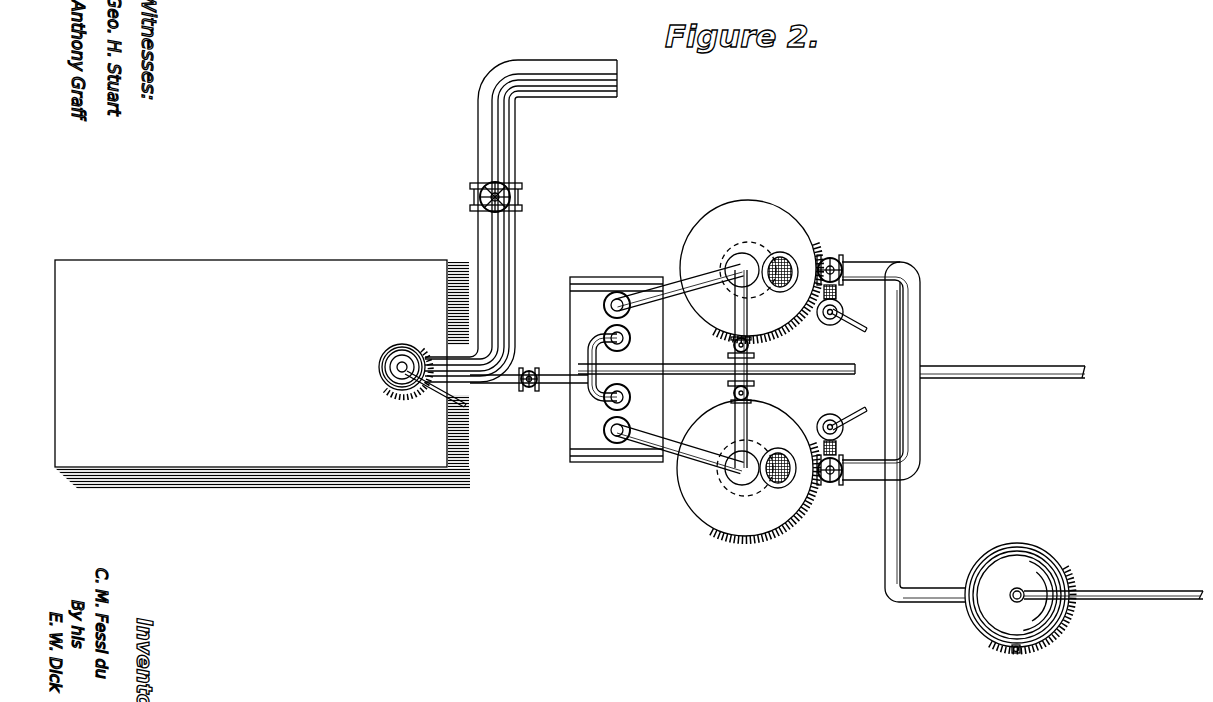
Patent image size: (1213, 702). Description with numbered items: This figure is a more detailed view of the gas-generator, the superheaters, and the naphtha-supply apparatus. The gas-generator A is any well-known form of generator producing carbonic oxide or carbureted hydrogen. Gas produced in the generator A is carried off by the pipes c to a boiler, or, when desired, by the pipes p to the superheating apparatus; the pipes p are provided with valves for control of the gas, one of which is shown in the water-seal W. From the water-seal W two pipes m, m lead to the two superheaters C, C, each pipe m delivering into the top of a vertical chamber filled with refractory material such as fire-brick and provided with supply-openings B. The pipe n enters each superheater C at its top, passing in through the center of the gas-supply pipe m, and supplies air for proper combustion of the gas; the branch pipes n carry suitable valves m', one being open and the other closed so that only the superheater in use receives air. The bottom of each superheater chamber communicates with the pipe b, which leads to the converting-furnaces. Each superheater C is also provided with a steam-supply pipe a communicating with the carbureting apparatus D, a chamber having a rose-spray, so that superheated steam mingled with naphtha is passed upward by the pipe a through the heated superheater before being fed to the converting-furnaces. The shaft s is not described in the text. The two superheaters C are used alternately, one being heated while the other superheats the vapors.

The gas-generator A is at (262, 374).
The supply-openings B is at (779, 370).
The superheater C is at (748, 367).
The carbureting apparatus D is at (1019, 590).
The water-seal W is at (616, 356).
The steam-supply pipe a is at (925, 432).
The pipe b is at (951, 370).
The pipes c is at (521, 209).
The pipes m is at (679, 367).
The valves m' is at (721, 369).
The pipe n is at (716, 356).
The pipes p is at (540, 376).
The shaft s is at (1113, 585).